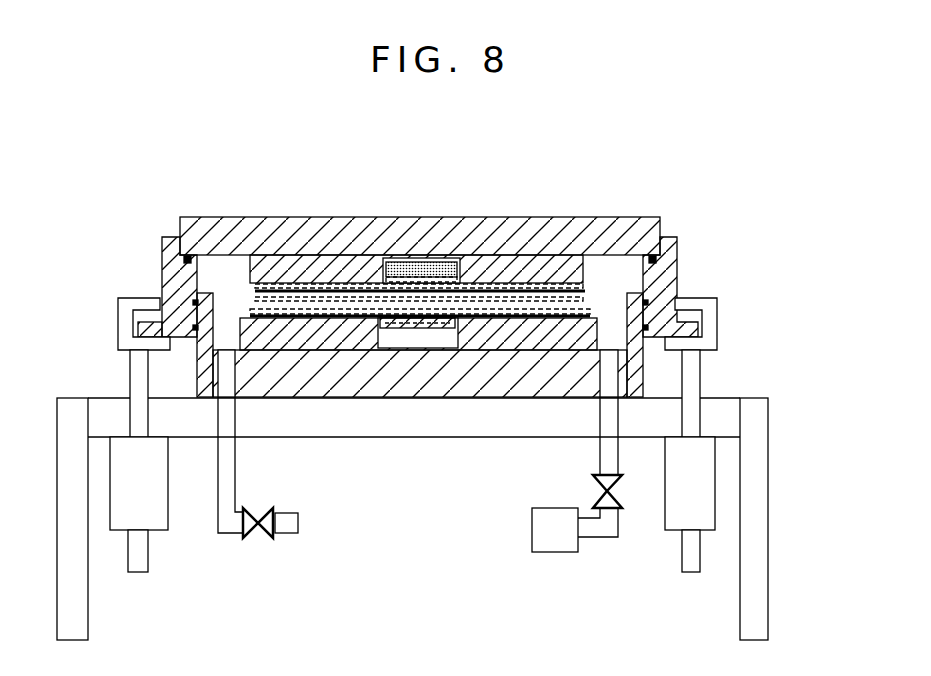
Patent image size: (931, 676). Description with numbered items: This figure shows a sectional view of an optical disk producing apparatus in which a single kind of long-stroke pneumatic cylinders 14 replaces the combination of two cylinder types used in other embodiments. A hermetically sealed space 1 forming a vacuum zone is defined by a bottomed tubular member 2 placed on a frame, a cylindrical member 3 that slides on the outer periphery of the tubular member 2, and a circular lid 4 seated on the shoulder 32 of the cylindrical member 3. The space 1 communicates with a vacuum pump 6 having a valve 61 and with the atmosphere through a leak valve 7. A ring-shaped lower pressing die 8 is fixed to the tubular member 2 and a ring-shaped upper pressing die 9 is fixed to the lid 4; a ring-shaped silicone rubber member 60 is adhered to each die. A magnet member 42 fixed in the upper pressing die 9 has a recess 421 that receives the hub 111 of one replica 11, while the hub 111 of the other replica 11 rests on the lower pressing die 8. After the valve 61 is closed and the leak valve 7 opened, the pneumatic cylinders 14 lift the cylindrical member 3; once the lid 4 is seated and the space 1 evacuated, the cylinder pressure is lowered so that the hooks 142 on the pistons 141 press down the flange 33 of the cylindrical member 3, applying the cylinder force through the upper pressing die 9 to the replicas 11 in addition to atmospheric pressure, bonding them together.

The hermetically sealed space 1 is at (233, 288).
The bottomed tubular member 2 is at (290, 382).
The cylindrical member 3 is at (680, 263).
The circular lid 4 is at (609, 218).
The vacuum pump 6 is at (548, 553).
The leak valve 7 is at (248, 538).
The lower pressing die 8 is at (495, 341).
The upper pressing die 9 is at (547, 278).
The replica 11 is at (300, 305).
The pneumatic cylinder 14 is at (168, 530).
The shoulder 32 is at (652, 256).
The circumferential flange 33 is at (150, 330).
The magnet member 42 is at (426, 274).
The silicone rubber member 60 is at (256, 302).
The valve 61 is at (595, 481).
The hub 111 is at (491, 305).
The piston 141 is at (130, 380).
The hook 142 is at (118, 315).
The recess 421 is at (381, 278).